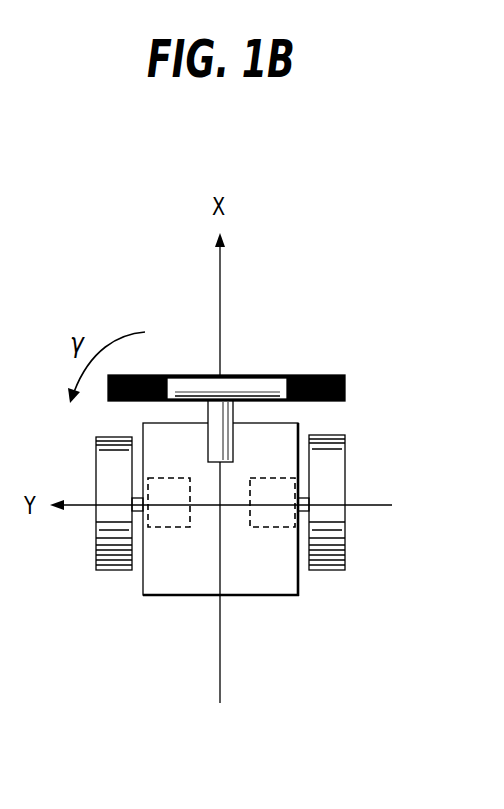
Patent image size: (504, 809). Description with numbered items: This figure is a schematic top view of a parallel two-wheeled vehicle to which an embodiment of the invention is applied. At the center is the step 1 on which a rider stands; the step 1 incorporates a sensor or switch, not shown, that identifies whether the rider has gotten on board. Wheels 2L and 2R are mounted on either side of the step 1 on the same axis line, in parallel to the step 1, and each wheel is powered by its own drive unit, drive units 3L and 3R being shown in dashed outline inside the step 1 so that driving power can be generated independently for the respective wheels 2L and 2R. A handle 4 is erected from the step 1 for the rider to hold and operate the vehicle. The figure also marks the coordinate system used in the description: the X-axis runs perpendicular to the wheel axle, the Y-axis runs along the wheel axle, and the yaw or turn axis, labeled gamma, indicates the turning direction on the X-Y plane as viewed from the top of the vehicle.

The step 1 is at (288, 583).
The left wheel 2L is at (104, 565).
The right wheel 2R is at (333, 565).
The left drive unit 3L is at (158, 527).
The right drive unit 3R is at (272, 527).
The handle 4 is at (317, 375).